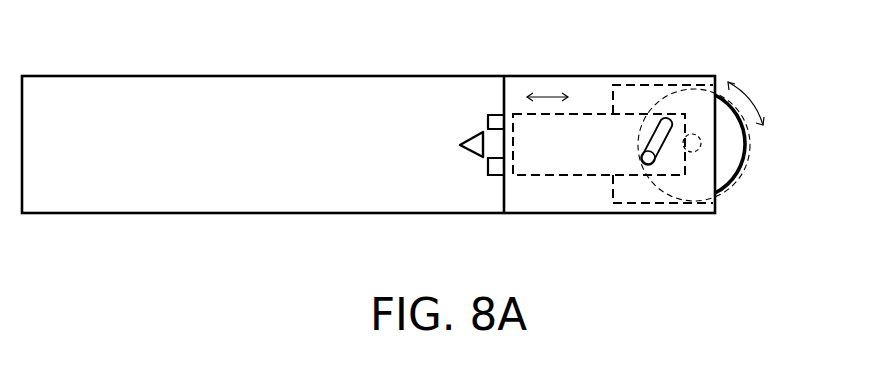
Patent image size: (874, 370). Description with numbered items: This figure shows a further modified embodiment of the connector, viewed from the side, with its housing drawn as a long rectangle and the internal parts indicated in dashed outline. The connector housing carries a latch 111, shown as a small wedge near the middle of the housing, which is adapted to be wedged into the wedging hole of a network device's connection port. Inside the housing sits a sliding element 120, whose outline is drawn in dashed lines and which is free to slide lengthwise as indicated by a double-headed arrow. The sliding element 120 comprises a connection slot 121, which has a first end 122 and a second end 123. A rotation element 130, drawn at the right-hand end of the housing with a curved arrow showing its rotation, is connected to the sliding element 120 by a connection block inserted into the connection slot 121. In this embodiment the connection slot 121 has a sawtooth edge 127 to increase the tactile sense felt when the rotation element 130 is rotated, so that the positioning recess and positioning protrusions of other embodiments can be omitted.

The latch 111 is at (474, 153).
The sliding element 120 is at (555, 158).
The connection slot 121 is at (654, 122).
The first end 122 is at (648, 175).
The second end 123 is at (666, 116).
The sawtooth edge 127 is at (697, 152).
The rotation element 130 is at (735, 145).